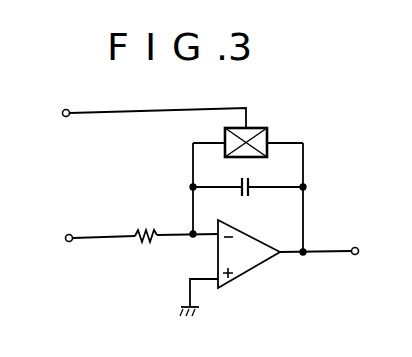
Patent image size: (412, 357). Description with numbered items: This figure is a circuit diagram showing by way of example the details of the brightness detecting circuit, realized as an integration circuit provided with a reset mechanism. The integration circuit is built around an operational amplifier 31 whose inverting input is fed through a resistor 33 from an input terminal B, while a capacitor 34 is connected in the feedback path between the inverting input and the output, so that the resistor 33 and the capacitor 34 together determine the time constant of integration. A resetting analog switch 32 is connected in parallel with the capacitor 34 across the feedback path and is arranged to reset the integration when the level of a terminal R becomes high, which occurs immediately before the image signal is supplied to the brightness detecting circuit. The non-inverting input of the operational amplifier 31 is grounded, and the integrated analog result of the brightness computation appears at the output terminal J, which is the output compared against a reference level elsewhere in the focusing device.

The operational amplifier 31 is at (258, 266).
The resetting analog switch 32 is at (250, 127).
The resistor 33 is at (146, 228).
The capacitor 34 is at (253, 190).
The reset terminal R is at (146, 115).
The input terminal B is at (133, 238).
The output J is at (327, 253).